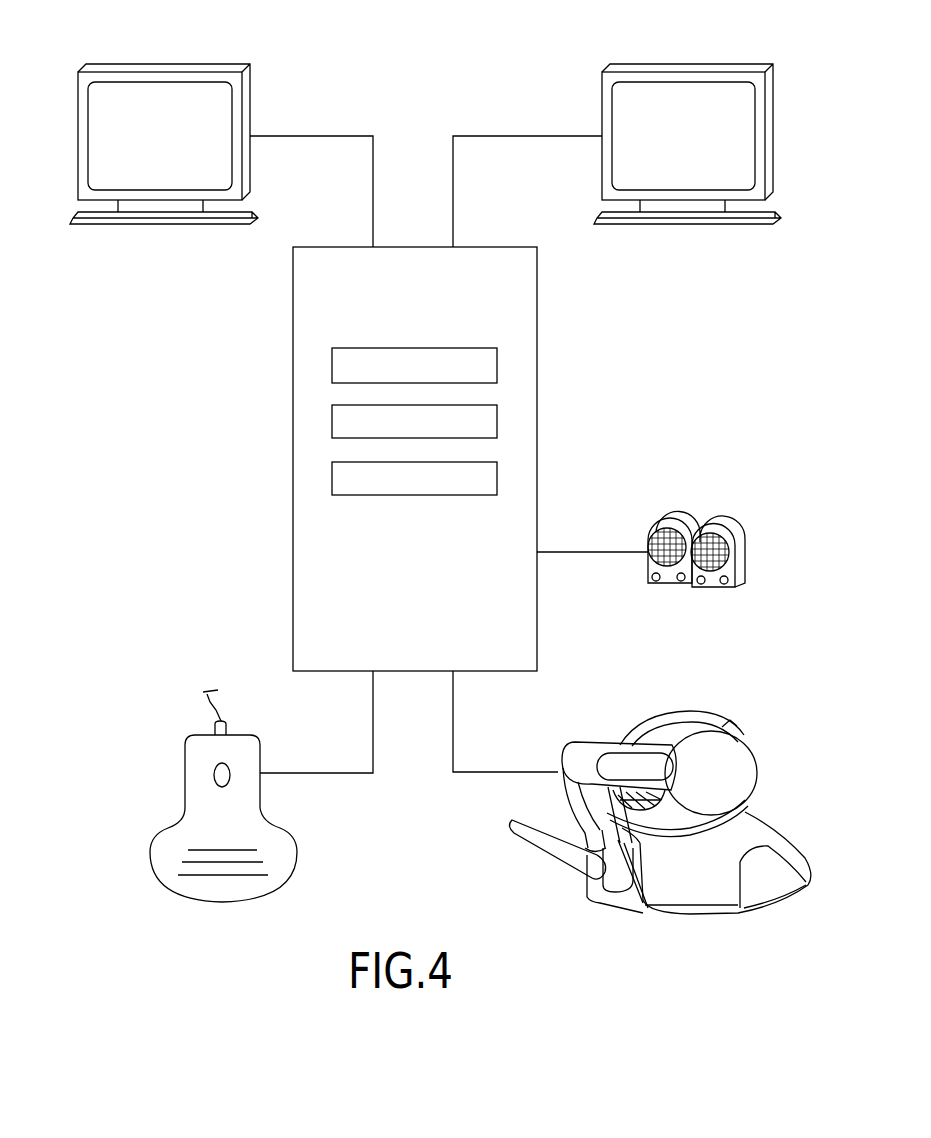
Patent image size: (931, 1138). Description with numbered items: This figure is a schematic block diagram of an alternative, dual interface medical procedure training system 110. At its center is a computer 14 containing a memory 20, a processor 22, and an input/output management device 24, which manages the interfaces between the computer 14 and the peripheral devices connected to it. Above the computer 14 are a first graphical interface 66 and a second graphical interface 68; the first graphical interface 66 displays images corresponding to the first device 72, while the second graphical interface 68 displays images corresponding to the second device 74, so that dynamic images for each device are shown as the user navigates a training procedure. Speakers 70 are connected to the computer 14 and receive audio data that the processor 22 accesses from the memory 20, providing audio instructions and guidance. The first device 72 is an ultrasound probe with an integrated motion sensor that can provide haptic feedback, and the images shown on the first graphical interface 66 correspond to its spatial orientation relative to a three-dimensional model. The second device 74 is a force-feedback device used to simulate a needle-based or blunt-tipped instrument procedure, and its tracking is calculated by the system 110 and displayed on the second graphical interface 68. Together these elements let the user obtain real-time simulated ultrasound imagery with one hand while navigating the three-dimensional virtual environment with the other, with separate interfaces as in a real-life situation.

The computer 14 is at (313, 577).
The memory 20 is at (338, 482).
The processor 22 is at (338, 428).
The input/output management device 24 is at (338, 370).
The first graphical interface 66 is at (167, 62).
The second graphical interface 68 is at (690, 62).
The speakers 70 is at (737, 515).
The first device 72 is at (185, 762).
The second device 74 is at (758, 777).
The system 110 is at (694, 1016).